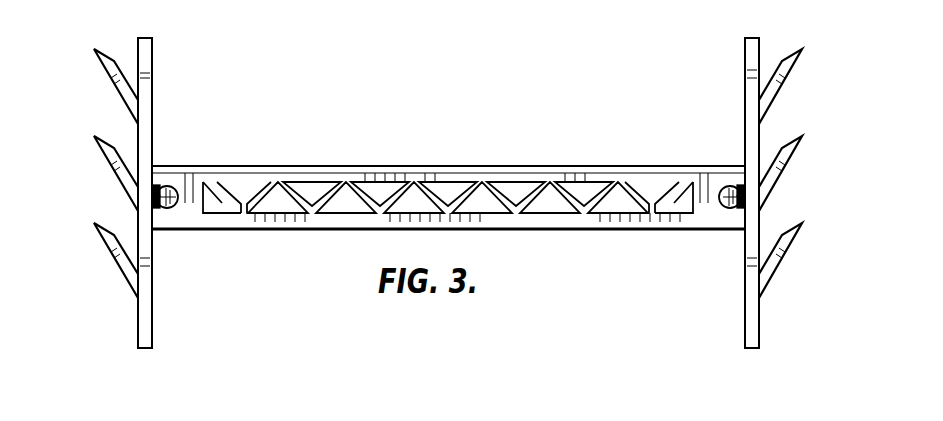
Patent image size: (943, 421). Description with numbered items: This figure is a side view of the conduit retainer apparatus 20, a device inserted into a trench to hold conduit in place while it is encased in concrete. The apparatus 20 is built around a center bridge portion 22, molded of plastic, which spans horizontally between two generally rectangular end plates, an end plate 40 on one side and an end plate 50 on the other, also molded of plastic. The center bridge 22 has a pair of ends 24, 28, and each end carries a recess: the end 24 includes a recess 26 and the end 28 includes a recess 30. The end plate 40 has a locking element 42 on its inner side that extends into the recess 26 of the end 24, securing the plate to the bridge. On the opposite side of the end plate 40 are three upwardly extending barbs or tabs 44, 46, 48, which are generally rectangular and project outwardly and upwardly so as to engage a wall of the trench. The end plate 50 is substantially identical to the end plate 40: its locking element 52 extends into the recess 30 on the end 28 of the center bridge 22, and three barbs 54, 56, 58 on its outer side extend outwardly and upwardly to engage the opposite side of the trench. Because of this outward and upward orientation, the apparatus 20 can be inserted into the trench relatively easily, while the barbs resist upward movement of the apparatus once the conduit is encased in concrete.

The conduit retainer apparatus 20 is at (477, 158).
The center bridge portion 22 is at (365, 165).
The end 24 is at (748, 167).
The recess 26 is at (729, 209).
The end 28 is at (148, 167).
The recess 30 is at (167, 209).
The end plate 40 is at (745, 283).
The locking element 42 is at (736, 184).
The barb 44 is at (780, 86).
The barb 46 is at (780, 173).
The barb 48 is at (781, 260).
The end plate 50 is at (152, 283).
The locking element 52 is at (160, 184).
The barb 54 is at (117, 88).
The barb 56 is at (117, 175).
The barb 58 is at (113, 256).